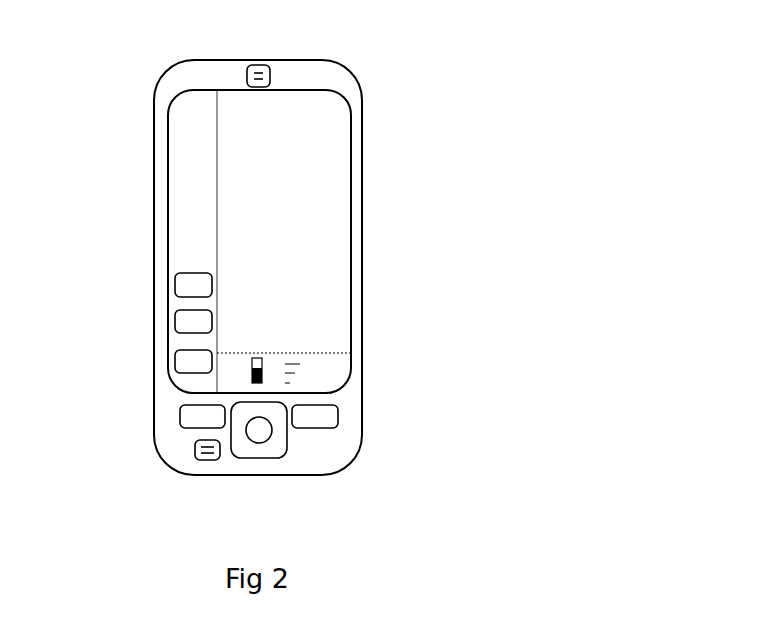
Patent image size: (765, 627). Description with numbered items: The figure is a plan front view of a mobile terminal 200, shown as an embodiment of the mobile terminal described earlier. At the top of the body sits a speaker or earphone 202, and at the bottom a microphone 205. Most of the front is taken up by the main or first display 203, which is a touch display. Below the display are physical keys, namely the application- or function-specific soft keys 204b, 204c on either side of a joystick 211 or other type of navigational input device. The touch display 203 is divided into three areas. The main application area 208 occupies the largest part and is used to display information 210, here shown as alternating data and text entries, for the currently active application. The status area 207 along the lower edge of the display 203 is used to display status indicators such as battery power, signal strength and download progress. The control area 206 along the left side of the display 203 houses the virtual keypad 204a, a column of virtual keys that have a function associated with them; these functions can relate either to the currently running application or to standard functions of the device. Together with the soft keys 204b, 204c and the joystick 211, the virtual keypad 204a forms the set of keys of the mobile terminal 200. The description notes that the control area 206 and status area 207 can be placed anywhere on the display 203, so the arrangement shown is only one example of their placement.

The mobile terminal 200 is at (138, 118).
The speaker or earphone 202 is at (257, 65).
The main or first display 203 is at (362, 170).
The virtual keypad 204a is at (175, 290).
The soft key 204b is at (180, 418).
The soft key 204c is at (338, 422).
The microphone 205 is at (203, 462).
The control area 206 is at (180, 232).
The status area 207 is at (320, 383).
The main application area 208 is at (348, 179).
The information 210 is at (312, 121).
The joystick 211 is at (287, 437).